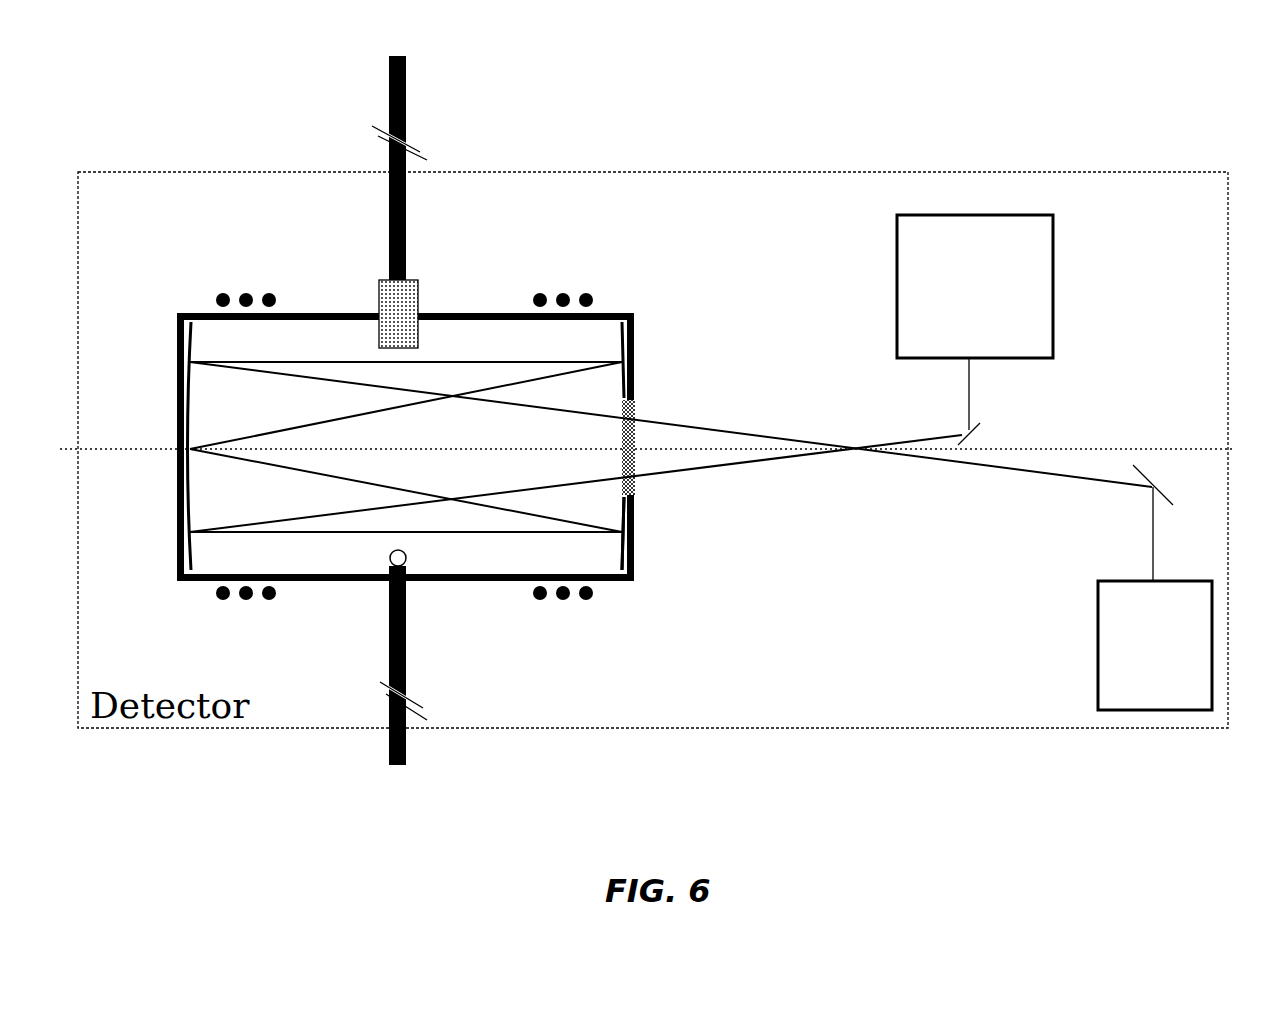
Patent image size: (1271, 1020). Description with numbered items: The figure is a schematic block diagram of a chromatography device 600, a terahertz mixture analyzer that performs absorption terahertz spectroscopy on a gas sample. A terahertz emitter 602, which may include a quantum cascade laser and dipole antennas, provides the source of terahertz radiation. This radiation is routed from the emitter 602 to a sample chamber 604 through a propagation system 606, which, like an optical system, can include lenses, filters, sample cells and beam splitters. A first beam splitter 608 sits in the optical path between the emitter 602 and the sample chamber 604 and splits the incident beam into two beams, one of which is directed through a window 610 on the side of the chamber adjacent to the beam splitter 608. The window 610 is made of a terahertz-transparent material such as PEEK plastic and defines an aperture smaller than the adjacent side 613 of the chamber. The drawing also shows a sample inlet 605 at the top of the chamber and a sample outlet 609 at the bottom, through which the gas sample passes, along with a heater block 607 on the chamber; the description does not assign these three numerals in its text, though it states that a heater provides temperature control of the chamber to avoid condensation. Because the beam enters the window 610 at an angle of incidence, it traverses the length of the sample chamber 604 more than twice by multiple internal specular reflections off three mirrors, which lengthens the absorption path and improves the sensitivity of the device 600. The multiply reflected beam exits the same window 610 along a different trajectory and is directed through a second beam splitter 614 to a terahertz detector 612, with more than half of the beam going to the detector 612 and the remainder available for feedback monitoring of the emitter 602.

The chromatography device 600 is at (1050, 84).
The terahertz emitter 602 is at (1010, 215).
The sample chamber 604 is at (187, 312).
The sample inlet 605 is at (410, 128).
The propagation system 606 is at (808, 492).
The heater block 607 is at (420, 296).
The first beam splitter 608 is at (978, 442).
The sample outlet 609 is at (390, 767).
The window 610 is at (640, 420).
The terahertz detector 612 is at (1123, 580).
The adjacent side 613 is at (635, 540).
The second beam splitter 614 is at (593, 613).